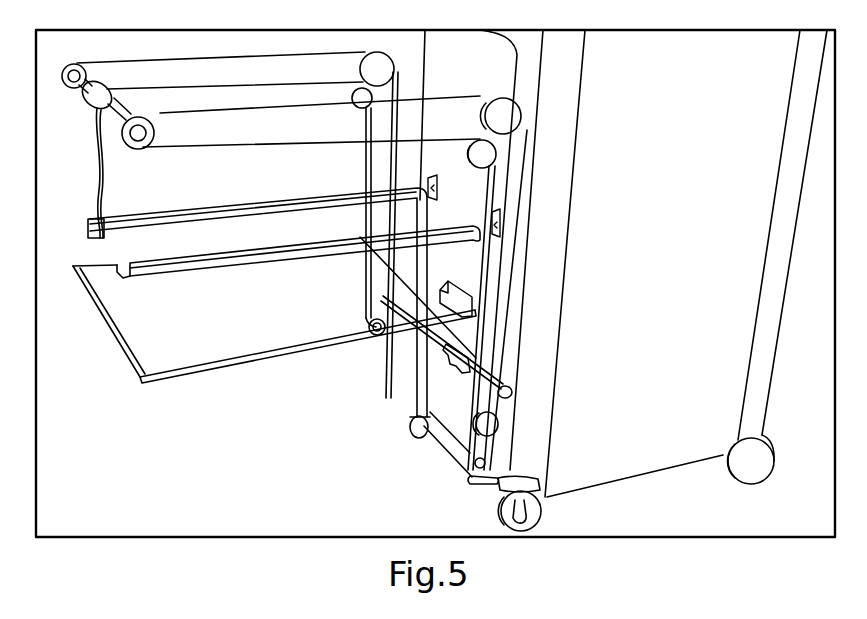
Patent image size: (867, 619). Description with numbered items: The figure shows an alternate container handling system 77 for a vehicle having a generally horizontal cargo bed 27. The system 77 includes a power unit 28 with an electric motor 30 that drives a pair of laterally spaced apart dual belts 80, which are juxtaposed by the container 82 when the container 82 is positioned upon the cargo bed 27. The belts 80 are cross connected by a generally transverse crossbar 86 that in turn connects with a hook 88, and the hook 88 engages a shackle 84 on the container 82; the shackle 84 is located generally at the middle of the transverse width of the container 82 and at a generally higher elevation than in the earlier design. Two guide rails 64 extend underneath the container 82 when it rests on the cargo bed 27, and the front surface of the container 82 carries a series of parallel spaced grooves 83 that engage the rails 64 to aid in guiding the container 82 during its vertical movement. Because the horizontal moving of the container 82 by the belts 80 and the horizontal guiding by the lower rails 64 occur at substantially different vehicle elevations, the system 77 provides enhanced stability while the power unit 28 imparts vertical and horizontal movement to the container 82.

The cargo bed area 27 is at (247, 344).
The power unit 28 is at (84, 109).
The electric motor 30 is at (102, 86).
The guide rails 64 is at (243, 260).
The container handling system 77 is at (253, 46).
The dual belts 80 is at (231, 148).
The container 82 is at (630, 481).
The parallel spaced grooves 83 is at (437, 189).
The shackle 84 is at (470, 297).
The transverse crossbar 86 is at (493, 373).
The hook 88 is at (460, 368).